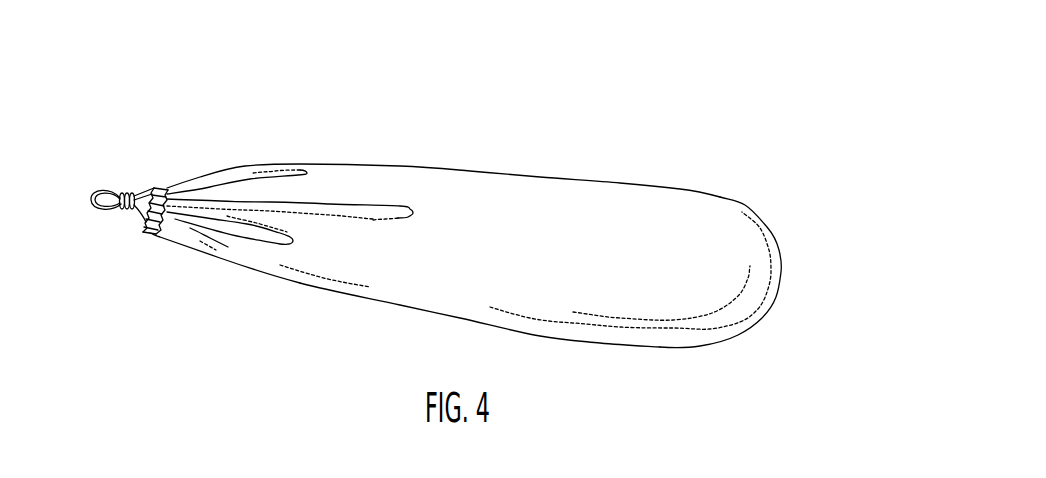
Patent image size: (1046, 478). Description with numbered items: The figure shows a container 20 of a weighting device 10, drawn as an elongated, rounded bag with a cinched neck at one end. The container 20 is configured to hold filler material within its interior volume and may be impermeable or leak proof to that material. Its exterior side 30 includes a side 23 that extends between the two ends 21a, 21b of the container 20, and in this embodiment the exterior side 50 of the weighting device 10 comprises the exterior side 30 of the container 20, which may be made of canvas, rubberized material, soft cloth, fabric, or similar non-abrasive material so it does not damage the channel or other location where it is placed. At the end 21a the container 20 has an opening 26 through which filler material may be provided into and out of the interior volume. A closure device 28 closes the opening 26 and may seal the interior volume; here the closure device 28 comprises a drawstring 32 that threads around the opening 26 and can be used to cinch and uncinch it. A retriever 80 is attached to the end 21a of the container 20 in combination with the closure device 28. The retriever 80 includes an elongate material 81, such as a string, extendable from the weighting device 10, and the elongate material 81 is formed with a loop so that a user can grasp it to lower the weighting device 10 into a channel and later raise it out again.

The weighting device 10 is at (670, 88).
The container 20 is at (680, 183).
The end 21a is at (185, 248).
The end 21b is at (753, 201).
The side 23 is at (450, 197).
The opening 26 is at (143, 228).
The closure device 28 is at (143, 183).
The exterior side 30 is at (580, 207).
The drawstring 32 is at (165, 190).
The exterior side 50 is at (728, 295).
The retriever 80 is at (110, 183).
The elongate material 81 is at (94, 214).